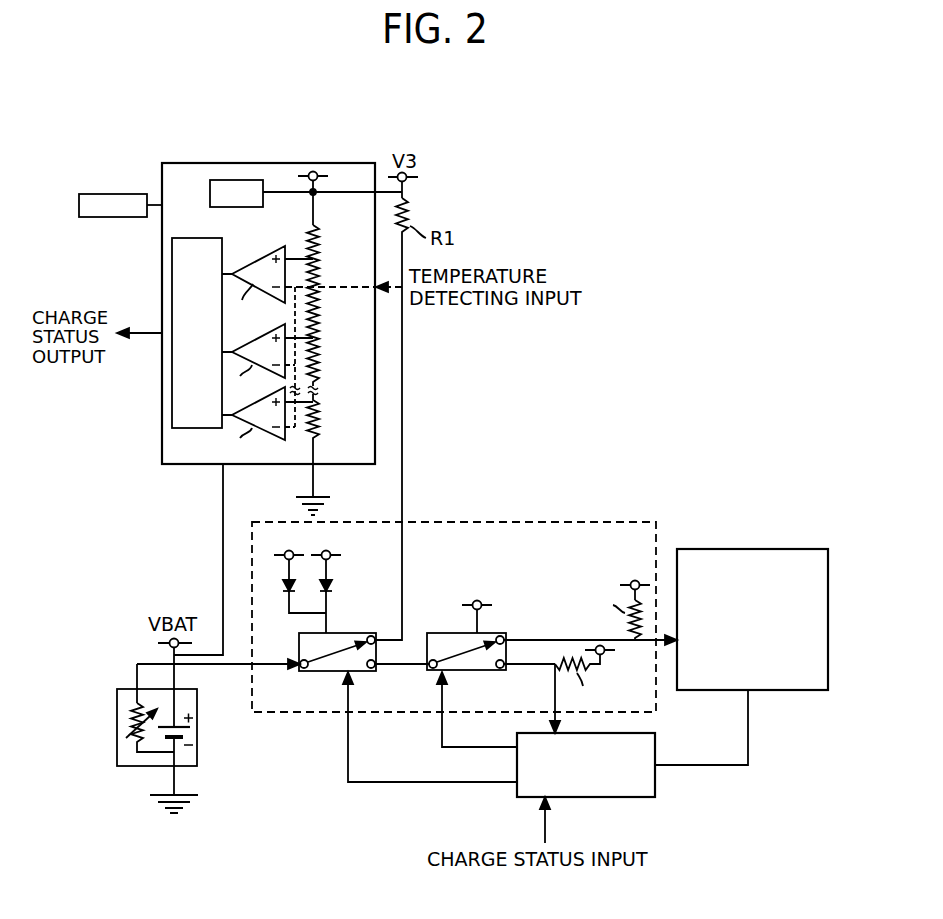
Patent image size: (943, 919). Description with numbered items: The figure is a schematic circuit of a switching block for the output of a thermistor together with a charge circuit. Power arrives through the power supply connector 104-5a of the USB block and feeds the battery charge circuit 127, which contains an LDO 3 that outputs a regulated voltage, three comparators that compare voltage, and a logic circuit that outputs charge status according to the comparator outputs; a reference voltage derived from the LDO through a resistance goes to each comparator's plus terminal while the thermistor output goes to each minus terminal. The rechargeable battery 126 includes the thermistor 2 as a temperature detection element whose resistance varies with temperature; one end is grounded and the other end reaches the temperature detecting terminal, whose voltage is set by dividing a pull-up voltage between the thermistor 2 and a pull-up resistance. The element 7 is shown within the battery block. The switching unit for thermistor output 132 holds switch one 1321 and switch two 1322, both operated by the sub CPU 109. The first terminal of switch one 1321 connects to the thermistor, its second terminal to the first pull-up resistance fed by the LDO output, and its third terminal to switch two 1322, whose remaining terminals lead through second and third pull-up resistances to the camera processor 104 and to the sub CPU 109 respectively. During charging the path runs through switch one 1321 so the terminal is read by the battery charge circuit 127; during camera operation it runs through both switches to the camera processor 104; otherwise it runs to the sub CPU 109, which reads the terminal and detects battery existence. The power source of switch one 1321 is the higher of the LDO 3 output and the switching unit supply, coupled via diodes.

The battery charge circuit 127 is at (225, 162).
The LDO 3 is at (210, 192).
The power supply connector 104-5a is at (83, 218).
The thermistor 2 is at (124, 702).
The rechargeable battery 126 is at (117, 755).
The battery 7 is at (198, 753).
The switching unit for thermistor output 132 is at (628, 520).
The switch1 1321 is at (308, 672).
The switch2 1322 is at (467, 672).
The camera processor 104 is at (783, 692).
The sub CPU 109 is at (632, 800).